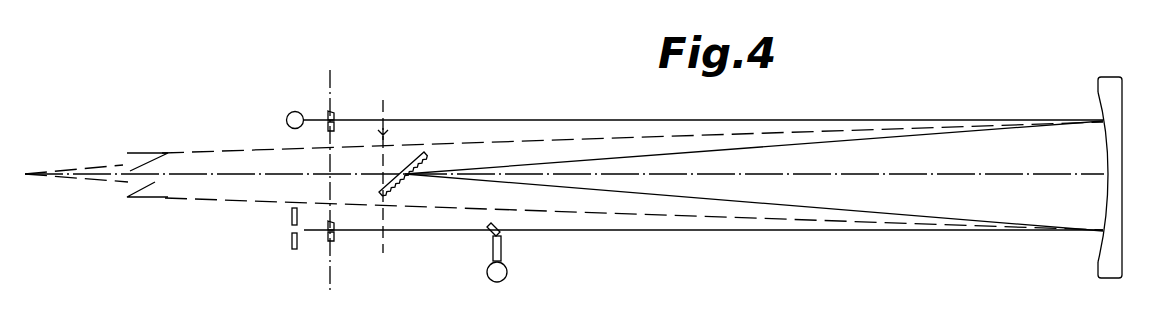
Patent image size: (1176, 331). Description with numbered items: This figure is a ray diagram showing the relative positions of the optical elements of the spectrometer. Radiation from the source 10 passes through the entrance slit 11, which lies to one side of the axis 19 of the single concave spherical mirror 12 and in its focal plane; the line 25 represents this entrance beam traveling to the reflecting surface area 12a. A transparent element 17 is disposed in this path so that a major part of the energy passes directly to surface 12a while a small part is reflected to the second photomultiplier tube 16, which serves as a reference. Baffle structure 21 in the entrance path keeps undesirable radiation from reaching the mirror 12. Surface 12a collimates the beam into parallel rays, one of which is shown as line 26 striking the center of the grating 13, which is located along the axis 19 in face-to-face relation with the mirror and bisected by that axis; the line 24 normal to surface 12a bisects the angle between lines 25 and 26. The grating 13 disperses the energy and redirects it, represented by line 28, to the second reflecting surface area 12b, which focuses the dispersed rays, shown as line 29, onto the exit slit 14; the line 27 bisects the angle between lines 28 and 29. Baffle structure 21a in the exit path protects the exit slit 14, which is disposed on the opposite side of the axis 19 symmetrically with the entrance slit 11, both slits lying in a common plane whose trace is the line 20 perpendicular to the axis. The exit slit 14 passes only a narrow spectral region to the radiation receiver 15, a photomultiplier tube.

The source 10 is at (292, 235).
The entrance slit 11 is at (335, 240).
The concave spherical mirror 12 is at (1104, 177).
The reflecting surface area 12a is at (1100, 242).
The second reflecting surface area 12b is at (1103, 135).
The spectral dispersing means 13 is at (425, 157).
The exit slit 14 is at (334, 110).
The radiation receiver 15 is at (290, 112).
The second photomultiplier tube 16 is at (507, 274).
The transparent element 17 is at (487, 232).
The axis 19 is at (247, 173).
The line 20 is at (325, 283).
The baffle structure 21 is at (384, 250).
The baffle structure 21a is at (364, 134).
The line normal to the reflecting surface 12a 24 is at (485, 208).
The line 25 is at (757, 232).
The line 26 is at (822, 207).
The line 27 is at (408, 145).
The line 28 is at (780, 148).
The line 29 is at (540, 120).